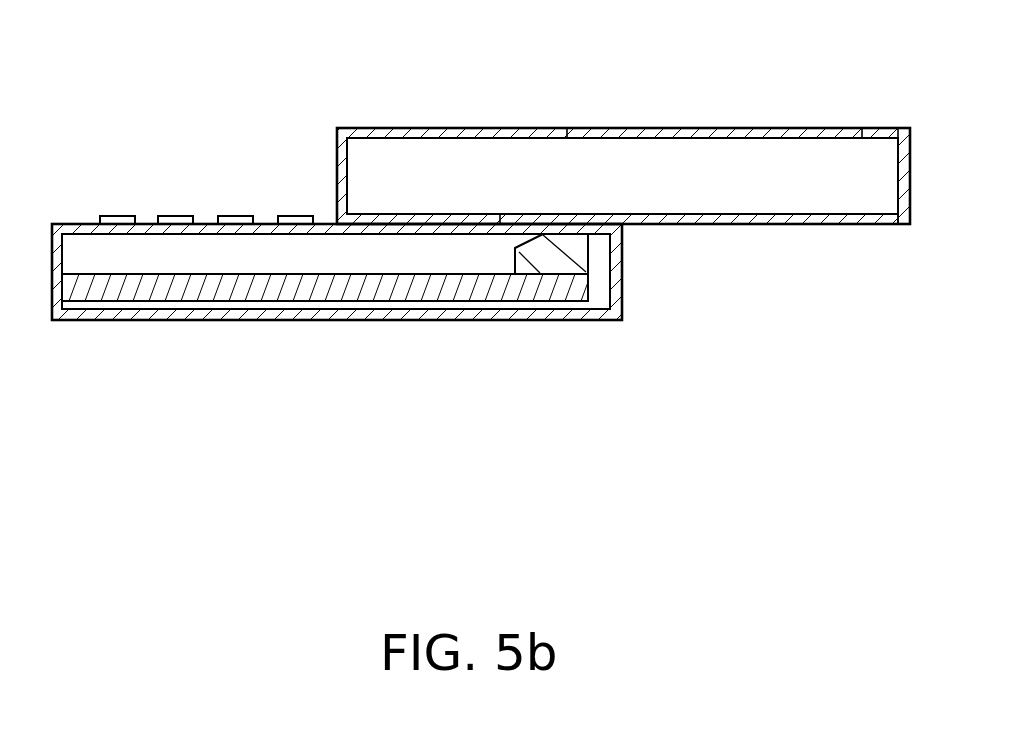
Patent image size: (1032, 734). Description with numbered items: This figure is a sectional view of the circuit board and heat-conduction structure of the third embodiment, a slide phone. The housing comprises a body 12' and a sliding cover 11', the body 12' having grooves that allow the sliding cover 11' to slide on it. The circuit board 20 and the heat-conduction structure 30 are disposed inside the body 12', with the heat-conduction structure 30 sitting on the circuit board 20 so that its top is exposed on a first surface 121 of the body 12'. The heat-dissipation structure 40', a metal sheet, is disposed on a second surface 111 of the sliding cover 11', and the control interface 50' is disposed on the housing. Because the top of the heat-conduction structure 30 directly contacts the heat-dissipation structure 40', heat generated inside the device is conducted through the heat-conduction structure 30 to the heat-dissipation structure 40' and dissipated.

The body 12' is at (337, 318).
The circuit board 20 is at (247, 292).
The heat-conduction structure 30 is at (553, 263).
The first surface 121 is at (143, 224).
The sliding cover 11' is at (623, 134).
The control interface 50' is at (714, 91).
The heat-dissipation structure 40' is at (699, 266).
The second surface 111 is at (873, 224).